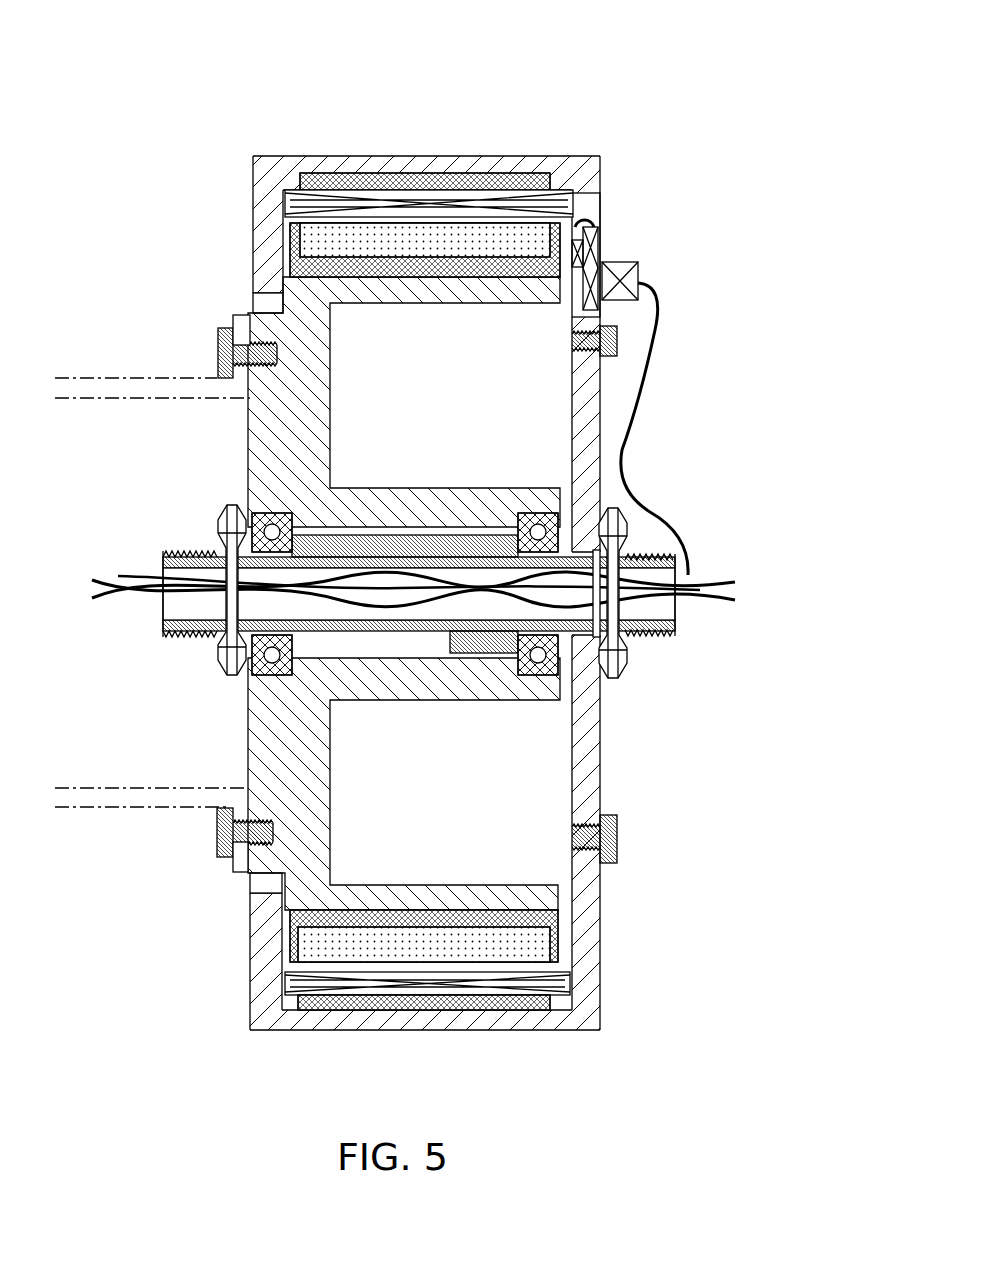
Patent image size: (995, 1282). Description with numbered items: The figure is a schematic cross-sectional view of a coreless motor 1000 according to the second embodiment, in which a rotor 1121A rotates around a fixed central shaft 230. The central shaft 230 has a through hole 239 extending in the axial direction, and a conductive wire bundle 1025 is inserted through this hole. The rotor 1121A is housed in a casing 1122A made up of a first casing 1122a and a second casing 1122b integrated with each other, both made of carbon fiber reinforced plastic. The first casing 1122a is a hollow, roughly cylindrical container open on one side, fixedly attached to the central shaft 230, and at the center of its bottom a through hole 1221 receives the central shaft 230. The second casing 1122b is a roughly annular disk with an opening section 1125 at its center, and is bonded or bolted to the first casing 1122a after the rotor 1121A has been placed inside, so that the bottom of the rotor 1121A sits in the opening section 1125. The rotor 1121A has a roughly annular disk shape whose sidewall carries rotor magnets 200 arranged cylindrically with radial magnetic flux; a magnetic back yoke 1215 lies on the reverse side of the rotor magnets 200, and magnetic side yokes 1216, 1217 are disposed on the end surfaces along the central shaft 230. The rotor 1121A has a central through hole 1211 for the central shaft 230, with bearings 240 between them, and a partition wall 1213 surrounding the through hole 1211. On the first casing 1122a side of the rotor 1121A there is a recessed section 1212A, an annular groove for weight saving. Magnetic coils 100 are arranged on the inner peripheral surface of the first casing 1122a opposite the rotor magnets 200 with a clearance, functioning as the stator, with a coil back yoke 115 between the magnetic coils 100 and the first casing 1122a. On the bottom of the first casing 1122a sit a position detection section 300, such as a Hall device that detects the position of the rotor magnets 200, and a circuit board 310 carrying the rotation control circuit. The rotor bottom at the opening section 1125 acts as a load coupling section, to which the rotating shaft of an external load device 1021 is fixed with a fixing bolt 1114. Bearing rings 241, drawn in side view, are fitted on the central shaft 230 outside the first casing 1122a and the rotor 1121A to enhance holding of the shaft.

The coreless motor 1000 is at (172, 50).
The magnetic coils 100 is at (528, 165).
The second casing 1122b is at (270, 160).
The coil back yoke 115 is at (382, 170).
The magnetic side yoke 1216 is at (575, 193).
The first casing 1122a is at (600, 423).
The opening section 1125 is at (250, 305).
The casing 1122A is at (615, 747).
The rotor 1121A is at (250, 437).
The through hole 1211 is at (320, 515).
The partition wall 1213 is at (373, 690).
The magnetic side yoke 1217 is at (300, 210).
The magnetic back yoke 1215 is at (318, 243).
The rotor magnets 200 is at (465, 235).
The position detection section 300 is at (582, 213).
The circuit board 310 is at (592, 250).
The recessed section 1212A is at (575, 328).
The fixing bolt 1114 is at (218, 352).
The external load device 1021 is at (90, 392).
The central shaft 230 is at (668, 638).
The through hole 239 is at (667, 613).
The conductive wire bundle 1025 is at (102, 556).
The bearings 240 is at (225, 513).
The through hole 1221 is at (600, 695).
The bearing rings 241 is at (220, 662).